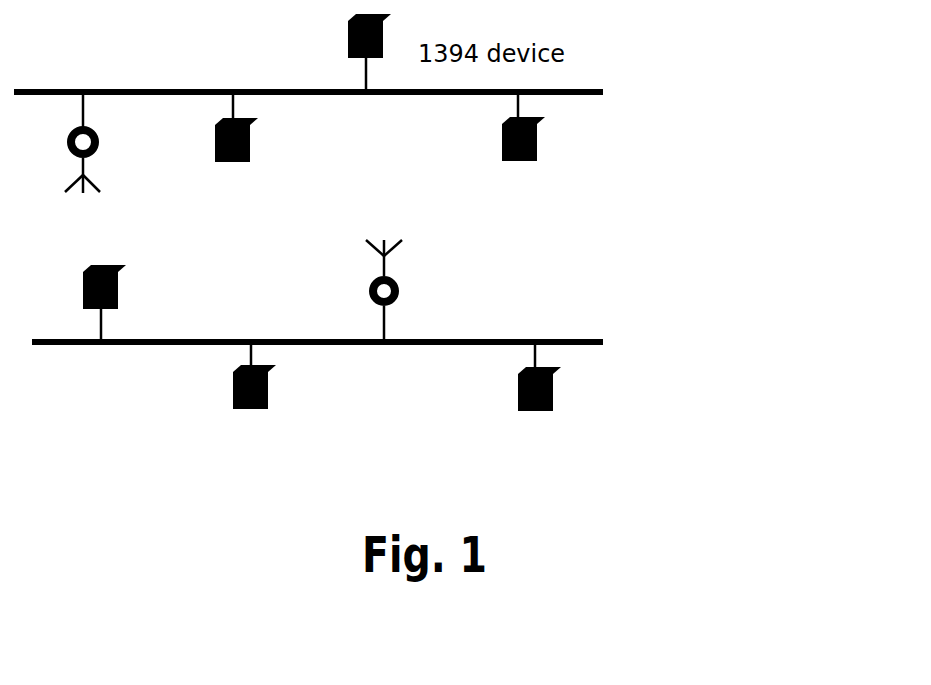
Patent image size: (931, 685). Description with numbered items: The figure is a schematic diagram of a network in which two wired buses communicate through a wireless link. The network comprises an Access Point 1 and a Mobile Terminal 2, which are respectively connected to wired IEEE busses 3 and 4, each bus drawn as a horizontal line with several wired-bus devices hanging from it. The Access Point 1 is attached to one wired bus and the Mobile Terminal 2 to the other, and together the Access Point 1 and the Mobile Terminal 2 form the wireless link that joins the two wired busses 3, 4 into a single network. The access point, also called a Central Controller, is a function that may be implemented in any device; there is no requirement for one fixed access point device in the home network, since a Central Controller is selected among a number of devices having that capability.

The access point 1 is at (97, 155).
The mobile terminal 2 is at (370, 298).
The wired IEEE 1394 bus 3 is at (345, 344).
The wired IEEE 1394 bus 4 is at (317, 94).